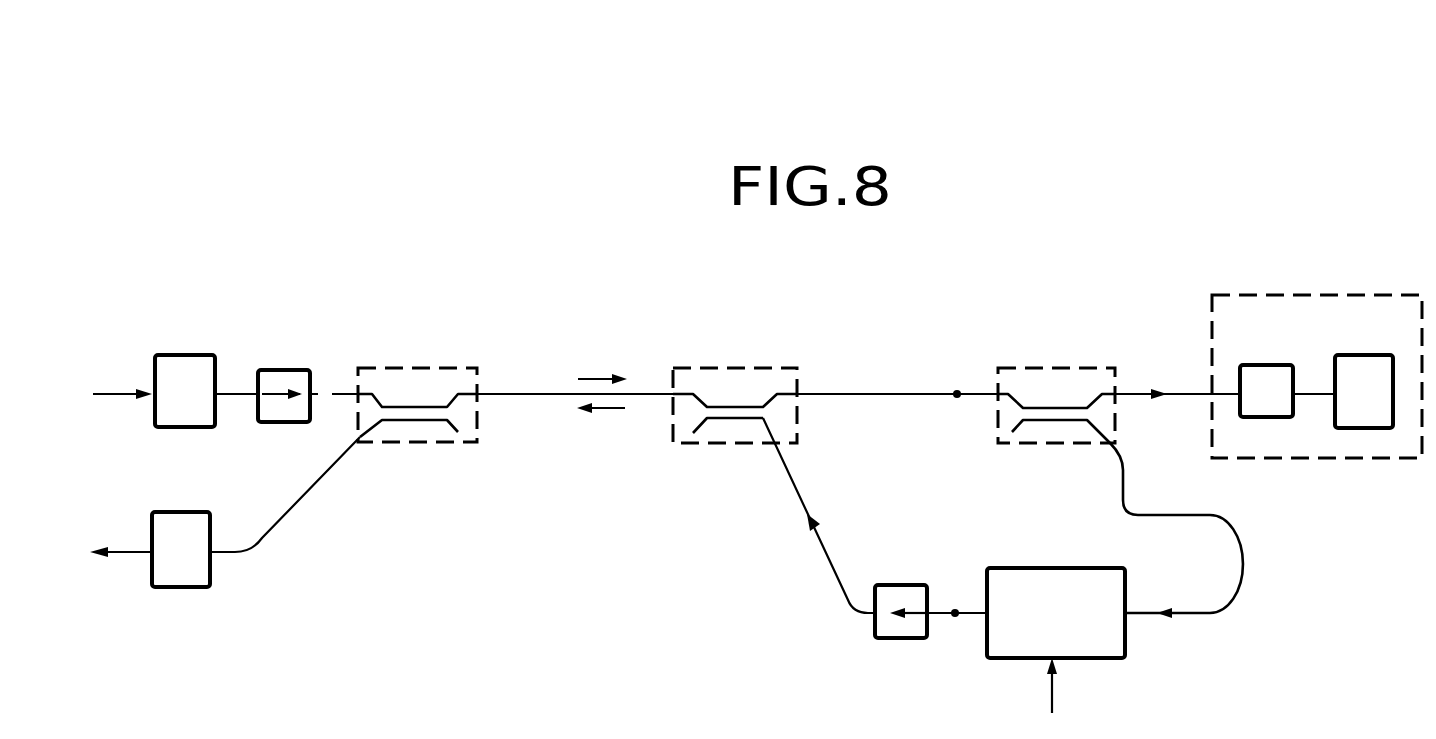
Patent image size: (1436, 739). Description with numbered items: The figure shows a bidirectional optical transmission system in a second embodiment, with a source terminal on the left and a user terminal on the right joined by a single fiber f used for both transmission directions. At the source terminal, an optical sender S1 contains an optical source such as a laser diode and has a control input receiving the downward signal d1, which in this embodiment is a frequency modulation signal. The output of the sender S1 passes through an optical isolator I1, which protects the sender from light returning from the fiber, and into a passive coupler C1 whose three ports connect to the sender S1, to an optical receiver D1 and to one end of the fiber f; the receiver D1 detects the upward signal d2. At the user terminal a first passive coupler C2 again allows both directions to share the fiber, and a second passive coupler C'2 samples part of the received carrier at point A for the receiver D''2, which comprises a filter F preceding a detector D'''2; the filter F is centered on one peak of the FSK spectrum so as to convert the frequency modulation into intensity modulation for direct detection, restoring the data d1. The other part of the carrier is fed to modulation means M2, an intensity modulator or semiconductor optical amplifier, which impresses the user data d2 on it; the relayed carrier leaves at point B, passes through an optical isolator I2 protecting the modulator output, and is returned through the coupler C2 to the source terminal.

The optical sender S1 is at (190, 363).
The optical isolator I1 is at (293, 372).
The passive coupler C1 is at (443, 368).
The fiber f is at (527, 393).
The modulation signal d1 is at (120, 375).
The modulation signal d2 is at (592, 617).
The optical receiver D1 is at (188, 525).
The first passive coupler C2 is at (747, 368).
The point A is at (957, 392).
The second passive coupler C'2 is at (1120, 450).
The receiver D''2 is at (1317, 408).
The filter F is at (1263, 375).
The detector D'''2 is at (1375, 386).
The optical isolator I2 is at (905, 585).
The point B is at (955, 610).
The modulation means M2 is at (1073, 578).